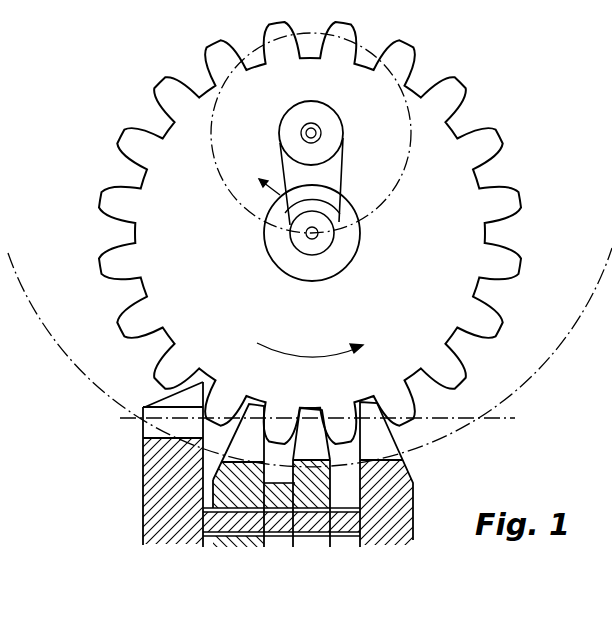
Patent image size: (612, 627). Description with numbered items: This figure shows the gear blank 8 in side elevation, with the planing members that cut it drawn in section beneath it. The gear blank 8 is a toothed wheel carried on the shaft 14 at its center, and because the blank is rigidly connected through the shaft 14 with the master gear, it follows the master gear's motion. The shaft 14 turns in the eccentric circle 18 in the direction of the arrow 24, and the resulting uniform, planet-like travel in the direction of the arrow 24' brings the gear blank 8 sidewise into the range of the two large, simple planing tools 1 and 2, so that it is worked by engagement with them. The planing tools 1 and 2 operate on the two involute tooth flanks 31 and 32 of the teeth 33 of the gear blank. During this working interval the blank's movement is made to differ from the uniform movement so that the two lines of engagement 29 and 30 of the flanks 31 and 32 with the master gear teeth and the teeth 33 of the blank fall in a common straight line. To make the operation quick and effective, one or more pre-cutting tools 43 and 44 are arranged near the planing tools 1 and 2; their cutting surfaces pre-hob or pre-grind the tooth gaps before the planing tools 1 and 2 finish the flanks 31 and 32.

The gear blank 8 is at (168, 187).
The arrow 24 is at (325, 163).
The arrow 24' is at (310, 335).
The eccentric circle 18 is at (404, 177).
The teeth of the gear blank 33 is at (500, 202).
The shaft 14 is at (307, 238).
The line of engagement 29 is at (120, 418).
The line of engagement 30 is at (493, 418).
The tooth flank 31 is at (270, 446).
The tooth flank 32 is at (352, 430).
The pre-cutting tool 43 is at (143, 438).
The planing tool 1 is at (240, 479).
The pre-cutting tool 44 is at (346, 484).
The planing tool 2 is at (400, 479).